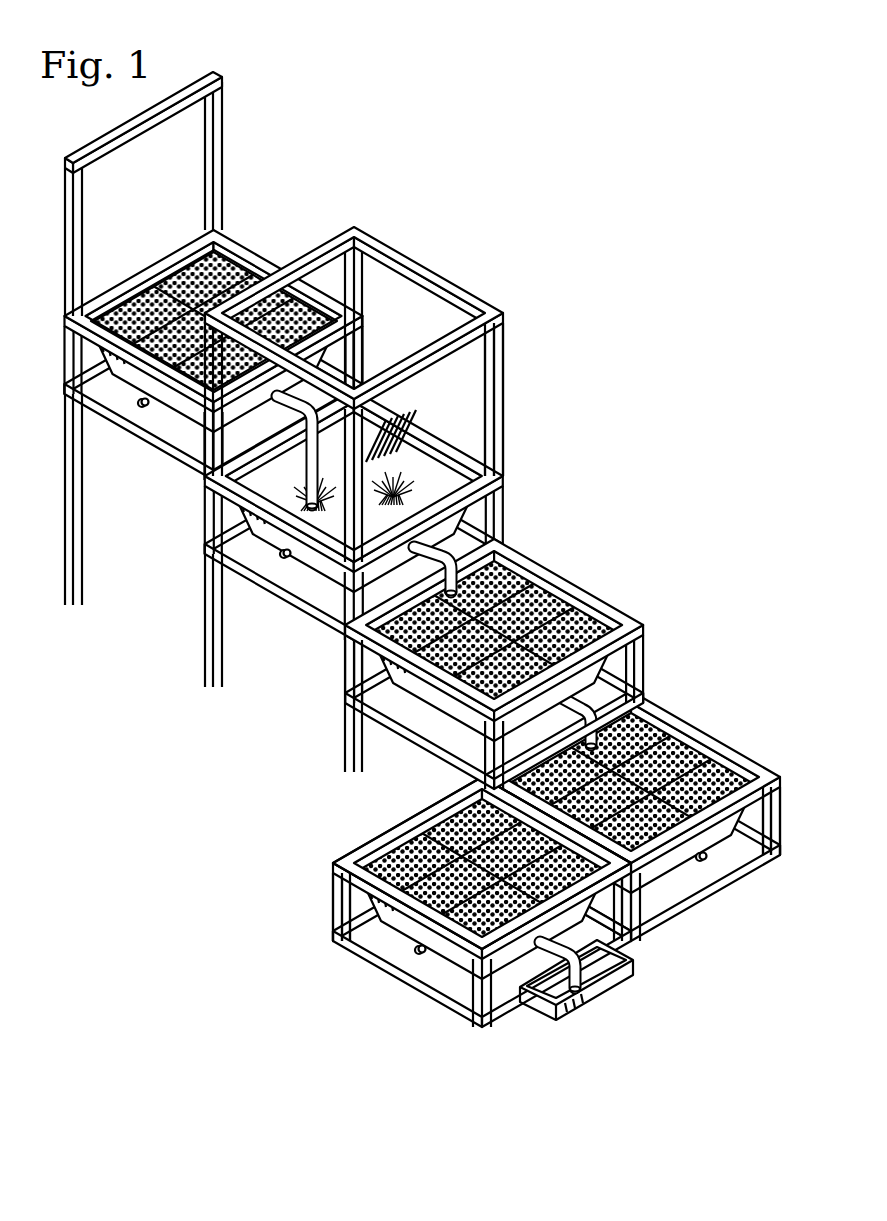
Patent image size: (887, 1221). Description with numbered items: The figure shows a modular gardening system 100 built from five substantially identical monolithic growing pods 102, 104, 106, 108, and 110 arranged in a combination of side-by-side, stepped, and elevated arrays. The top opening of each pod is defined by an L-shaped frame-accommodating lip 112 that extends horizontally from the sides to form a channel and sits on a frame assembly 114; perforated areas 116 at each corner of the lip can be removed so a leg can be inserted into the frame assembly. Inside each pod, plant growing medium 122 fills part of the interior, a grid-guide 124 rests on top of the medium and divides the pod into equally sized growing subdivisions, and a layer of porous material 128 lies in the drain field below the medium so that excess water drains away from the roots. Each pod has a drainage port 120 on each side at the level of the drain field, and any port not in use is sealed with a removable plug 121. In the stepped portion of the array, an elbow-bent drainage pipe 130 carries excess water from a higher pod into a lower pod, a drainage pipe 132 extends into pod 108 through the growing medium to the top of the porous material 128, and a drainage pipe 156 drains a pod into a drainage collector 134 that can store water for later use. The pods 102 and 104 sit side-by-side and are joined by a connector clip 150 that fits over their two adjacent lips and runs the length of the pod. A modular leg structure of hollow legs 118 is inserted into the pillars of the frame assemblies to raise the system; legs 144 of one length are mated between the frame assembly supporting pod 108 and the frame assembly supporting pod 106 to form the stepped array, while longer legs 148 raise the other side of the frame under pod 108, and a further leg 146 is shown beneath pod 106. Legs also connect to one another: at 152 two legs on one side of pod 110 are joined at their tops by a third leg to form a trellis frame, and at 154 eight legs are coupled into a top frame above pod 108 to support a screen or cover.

The modular gardening system 100 is at (492, 211).
The monolithic growing pod 102 is at (382, 835).
The monolithic growing pod 104 is at (703, 731).
The monolithic growing pod 106 is at (596, 597).
The monolithic growing pod 108 is at (432, 430).
The monolithic growing pod 110 is at (243, 253).
The frame-accommodating lip 112 is at (333, 868).
The frame assembly 114 is at (322, 915).
The perforated areas 116 is at (778, 775).
The legs 118 is at (70, 600).
The drainage port 120 is at (285, 556).
The plug 121 is at (140, 406).
The plant growing medium 122 is at (651, 726).
The grid-guide 124 is at (168, 285).
The porous material 128 is at (385, 490).
The drainage pipe 130 is at (452, 578).
The drainage pipe 132 is at (303, 458).
The drainage collector 134 is at (606, 983).
The legs 144 is at (498, 380).
The leg 146 is at (345, 748).
The legs 148 is at (205, 663).
The connector clip 150 is at (513, 797).
The trellis frame 152 is at (85, 141).
The top frame 154 is at (370, 233).
The drainage pipe 156 is at (548, 955).